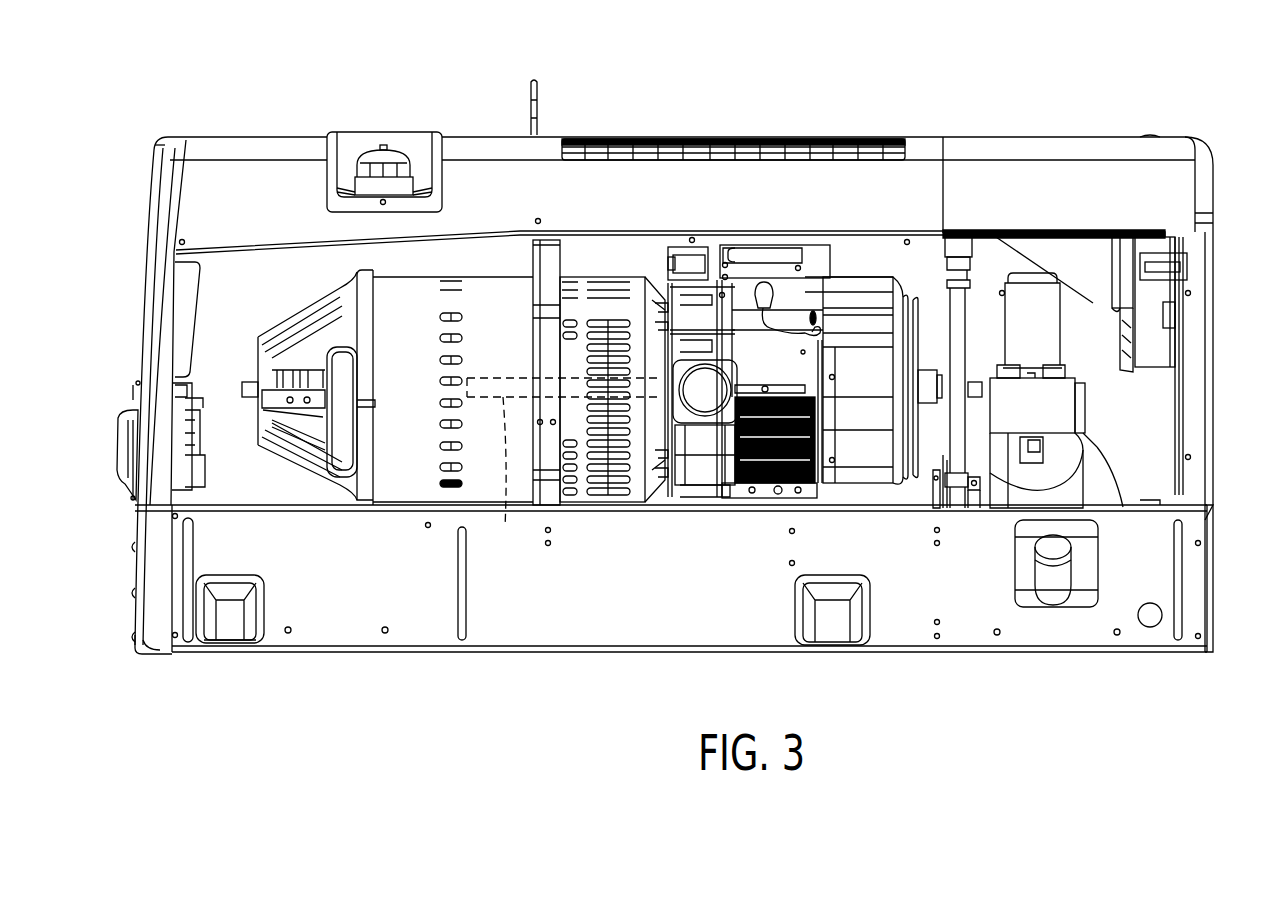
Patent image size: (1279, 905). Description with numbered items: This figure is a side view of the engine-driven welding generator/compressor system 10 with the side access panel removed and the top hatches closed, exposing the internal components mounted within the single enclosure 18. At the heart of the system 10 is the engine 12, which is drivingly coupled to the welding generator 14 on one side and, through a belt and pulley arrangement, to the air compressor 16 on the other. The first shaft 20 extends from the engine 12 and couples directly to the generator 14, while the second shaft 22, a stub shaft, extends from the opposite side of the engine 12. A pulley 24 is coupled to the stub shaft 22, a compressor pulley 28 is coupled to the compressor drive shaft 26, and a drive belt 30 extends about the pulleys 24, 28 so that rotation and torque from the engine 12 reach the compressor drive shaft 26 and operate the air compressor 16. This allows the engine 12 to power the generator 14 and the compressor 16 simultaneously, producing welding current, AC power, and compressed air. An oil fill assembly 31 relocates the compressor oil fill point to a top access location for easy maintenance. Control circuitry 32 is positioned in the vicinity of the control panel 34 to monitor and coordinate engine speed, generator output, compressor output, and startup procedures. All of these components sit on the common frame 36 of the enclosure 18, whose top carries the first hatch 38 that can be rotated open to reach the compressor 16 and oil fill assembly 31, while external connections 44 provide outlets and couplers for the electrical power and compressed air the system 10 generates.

The welding generator/compressor system 10 is at (1078, 82).
The engine 12 is at (856, 258).
The welding generator 14 is at (491, 292).
The air compressor 16 is at (1097, 447).
The enclosure 18 is at (300, 110).
The first shaft 20 is at (563, 468).
The second shaft 22 is at (985, 393).
The pulley 24 is at (968, 373).
The compressor drive shaft 26 is at (974, 502).
The compressor pulley 28 is at (933, 493).
The drive belt 30 is at (947, 453).
The oil fill assembly 31 is at (975, 276).
The control circuitry 32 is at (205, 280).
The control panel 34 is at (147, 186).
The frame 36 is at (318, 508).
The first hatch 38 is at (996, 136).
The external connections 44 is at (107, 432).